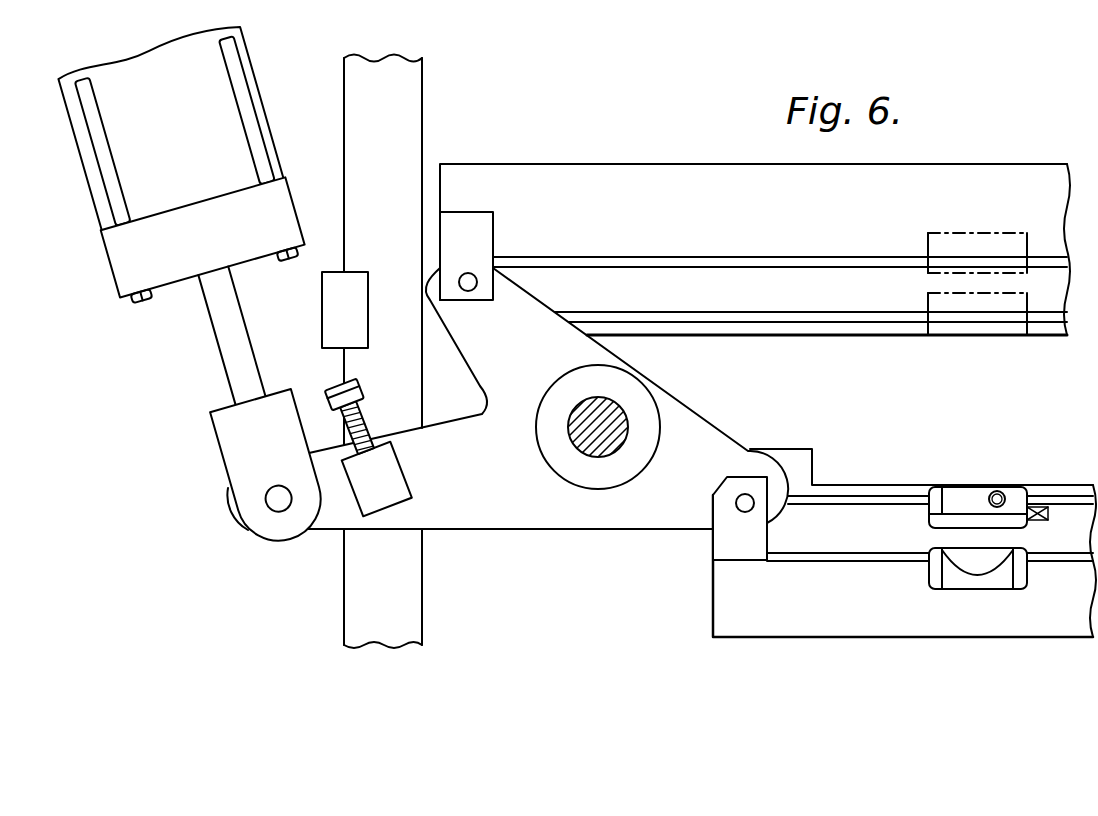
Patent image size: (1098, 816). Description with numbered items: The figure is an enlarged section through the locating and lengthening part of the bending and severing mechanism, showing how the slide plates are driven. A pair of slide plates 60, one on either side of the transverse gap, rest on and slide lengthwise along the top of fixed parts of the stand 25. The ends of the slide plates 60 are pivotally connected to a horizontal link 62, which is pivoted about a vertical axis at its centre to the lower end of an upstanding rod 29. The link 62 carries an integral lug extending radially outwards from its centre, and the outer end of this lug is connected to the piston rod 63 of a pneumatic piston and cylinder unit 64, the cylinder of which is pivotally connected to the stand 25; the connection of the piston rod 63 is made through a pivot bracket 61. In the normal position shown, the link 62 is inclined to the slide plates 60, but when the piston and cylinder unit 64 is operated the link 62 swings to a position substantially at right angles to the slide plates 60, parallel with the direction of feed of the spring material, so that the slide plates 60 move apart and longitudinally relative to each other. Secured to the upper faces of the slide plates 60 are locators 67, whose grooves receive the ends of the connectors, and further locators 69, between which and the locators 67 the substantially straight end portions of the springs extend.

The stand 25 is at (403, 617).
The upstanding rod 29 is at (622, 418).
The slide plate 60 is at (583, 178).
The pivot bracket 61 is at (717, 450).
The link 62 is at (485, 503).
The piston rod 63 is at (223, 349).
The pneumatic piston and cylinder unit 64 is at (193, 131).
The locator 67 is at (968, 493).
The locator 69 is at (977, 573).